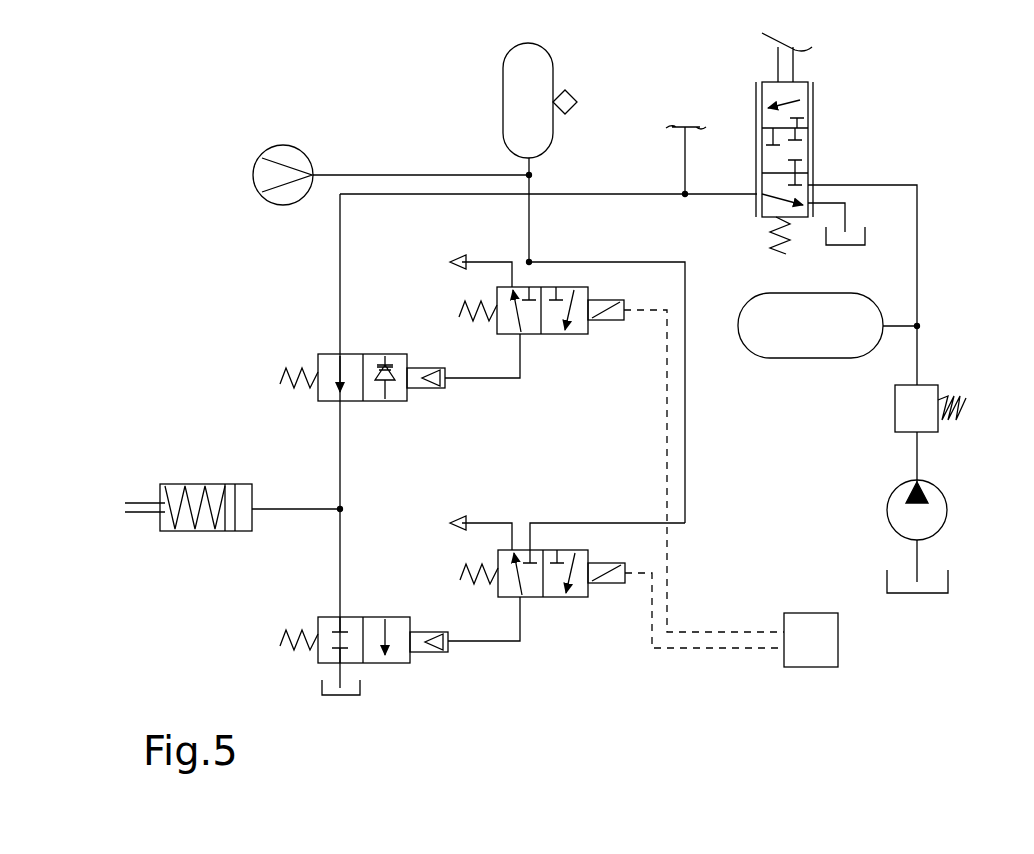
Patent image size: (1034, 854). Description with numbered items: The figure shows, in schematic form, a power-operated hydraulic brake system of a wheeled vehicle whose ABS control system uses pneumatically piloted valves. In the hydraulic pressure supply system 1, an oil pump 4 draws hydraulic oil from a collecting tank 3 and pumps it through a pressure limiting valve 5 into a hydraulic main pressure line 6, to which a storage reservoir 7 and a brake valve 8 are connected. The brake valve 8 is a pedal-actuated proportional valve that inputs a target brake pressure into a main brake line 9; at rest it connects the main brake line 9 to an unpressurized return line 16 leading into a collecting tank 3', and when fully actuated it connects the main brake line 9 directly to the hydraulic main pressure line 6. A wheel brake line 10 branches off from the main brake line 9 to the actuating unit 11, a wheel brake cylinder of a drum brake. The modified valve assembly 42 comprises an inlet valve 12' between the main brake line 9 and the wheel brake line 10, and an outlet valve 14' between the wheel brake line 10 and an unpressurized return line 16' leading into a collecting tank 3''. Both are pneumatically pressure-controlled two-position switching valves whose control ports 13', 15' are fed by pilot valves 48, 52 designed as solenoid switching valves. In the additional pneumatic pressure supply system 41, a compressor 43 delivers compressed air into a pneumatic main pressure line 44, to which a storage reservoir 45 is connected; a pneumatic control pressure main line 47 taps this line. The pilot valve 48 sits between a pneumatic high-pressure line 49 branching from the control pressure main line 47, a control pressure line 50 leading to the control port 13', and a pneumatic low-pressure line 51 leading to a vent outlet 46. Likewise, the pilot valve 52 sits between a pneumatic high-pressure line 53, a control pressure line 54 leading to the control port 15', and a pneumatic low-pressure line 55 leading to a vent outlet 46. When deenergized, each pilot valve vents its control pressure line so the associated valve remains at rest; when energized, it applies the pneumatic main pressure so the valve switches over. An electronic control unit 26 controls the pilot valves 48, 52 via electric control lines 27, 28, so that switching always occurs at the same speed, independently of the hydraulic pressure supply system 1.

The hydraulic pressure supply system 1 is at (833, 463).
The collecting tank 3 is at (951, 565).
The collecting tank 3' is at (947, 214).
The collecting tank 3'' is at (298, 675).
The oil pump 4 is at (948, 508).
The pressure limiting valve 5 is at (924, 421).
The hydraulic main pressure line 6 is at (918, 295).
The storage reservoir 7 is at (818, 338).
The brake valve 8 is at (832, 140).
The main brake line 9 is at (723, 192).
The wheel brake line 10 is at (290, 507).
The actuating unit 11 is at (200, 483).
The inlet valve 12' is at (310, 339).
The control port 13' is at (433, 413).
The outlet valve 14' is at (315, 603).
The control port 15' is at (436, 607).
The return line 16 is at (885, 185).
The return line 16' is at (403, 689).
The electronic control unit 26 is at (840, 643).
The electric control line 27 is at (670, 576).
The electric control line 28 is at (747, 652).
The pneumatic pressure supply system 41 is at (358, 125).
The valve assembly 42 is at (245, 230).
The compressor 43 is at (278, 146).
The pneumatic main pressure line 44 is at (415, 175).
The storage reservoir 45 is at (543, 113).
The vent outlet 46 is at (460, 262).
The pneumatic control pressure main line 47 is at (533, 228).
The pilot valve 48 is at (550, 348).
The pneumatic high-pressure line 49 is at (532, 270).
The control pressure line 50 is at (498, 380).
The pneumatic low-pressure line 51 is at (487, 262).
The pilot valve 52 is at (553, 613).
The pneumatic high-pressure line 53 is at (600, 522).
The control pressure line 54 is at (497, 645).
The pneumatic low-pressure line 55 is at (490, 522).